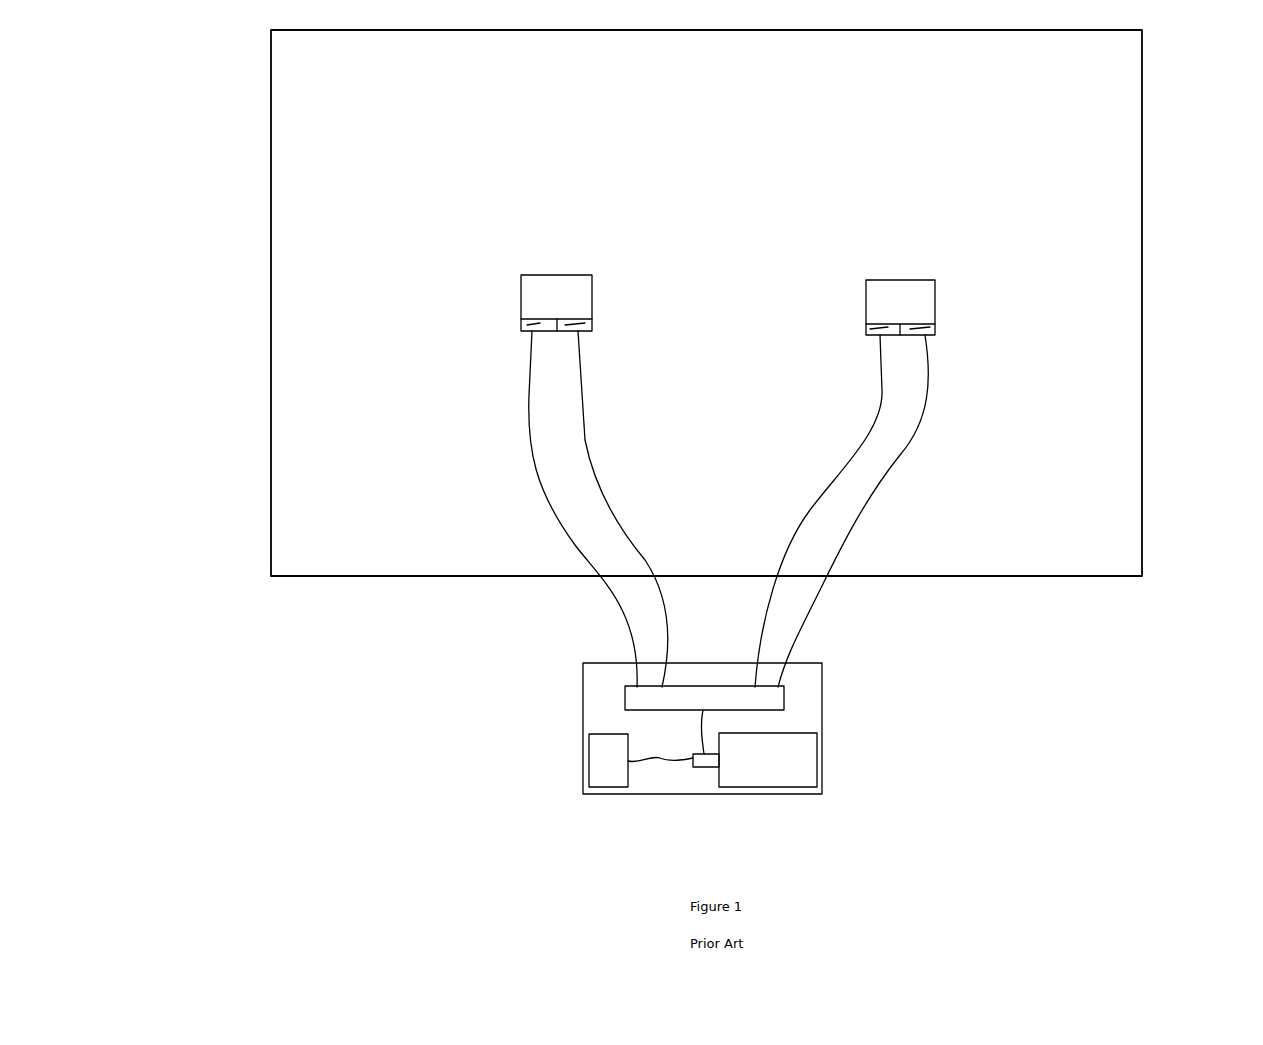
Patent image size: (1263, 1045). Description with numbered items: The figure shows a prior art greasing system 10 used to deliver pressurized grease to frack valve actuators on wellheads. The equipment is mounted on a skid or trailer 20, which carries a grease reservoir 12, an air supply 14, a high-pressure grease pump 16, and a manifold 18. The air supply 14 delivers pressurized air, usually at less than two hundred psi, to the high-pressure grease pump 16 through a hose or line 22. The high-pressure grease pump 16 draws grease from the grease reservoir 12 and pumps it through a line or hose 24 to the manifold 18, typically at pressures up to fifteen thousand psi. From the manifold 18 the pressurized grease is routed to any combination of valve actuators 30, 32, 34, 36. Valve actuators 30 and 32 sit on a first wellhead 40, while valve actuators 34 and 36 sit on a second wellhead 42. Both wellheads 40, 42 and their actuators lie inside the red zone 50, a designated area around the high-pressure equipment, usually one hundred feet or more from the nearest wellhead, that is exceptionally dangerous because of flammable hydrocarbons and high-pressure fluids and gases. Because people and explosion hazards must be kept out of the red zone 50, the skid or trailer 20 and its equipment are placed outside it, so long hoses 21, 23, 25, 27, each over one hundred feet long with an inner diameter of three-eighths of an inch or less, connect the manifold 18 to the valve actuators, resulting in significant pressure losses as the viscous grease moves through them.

The prior art greasing system 10 is at (1002, 674).
The grease reservoir 12 is at (802, 780).
The air supply 14 is at (605, 778).
The high-pressure grease pump 16 is at (706, 767).
The manifold 18 is at (775, 694).
The skid or trailer 20 is at (583, 676).
The hose 21 is at (530, 397).
The hose or line 22 is at (655, 762).
The hose 23 is at (585, 445).
The line or hose 24 is at (702, 718).
The hose 25 is at (882, 385).
The hose 27 is at (928, 438).
The valve actuator 30 is at (538, 324).
The valve actuator 32 is at (572, 324).
The valve actuator 34 is at (882, 328).
The valve actuator 36 is at (918, 328).
The wellhead 40 is at (555, 285).
The wellhead 42 is at (899, 291).
The red zone 50 is at (1142, 203).